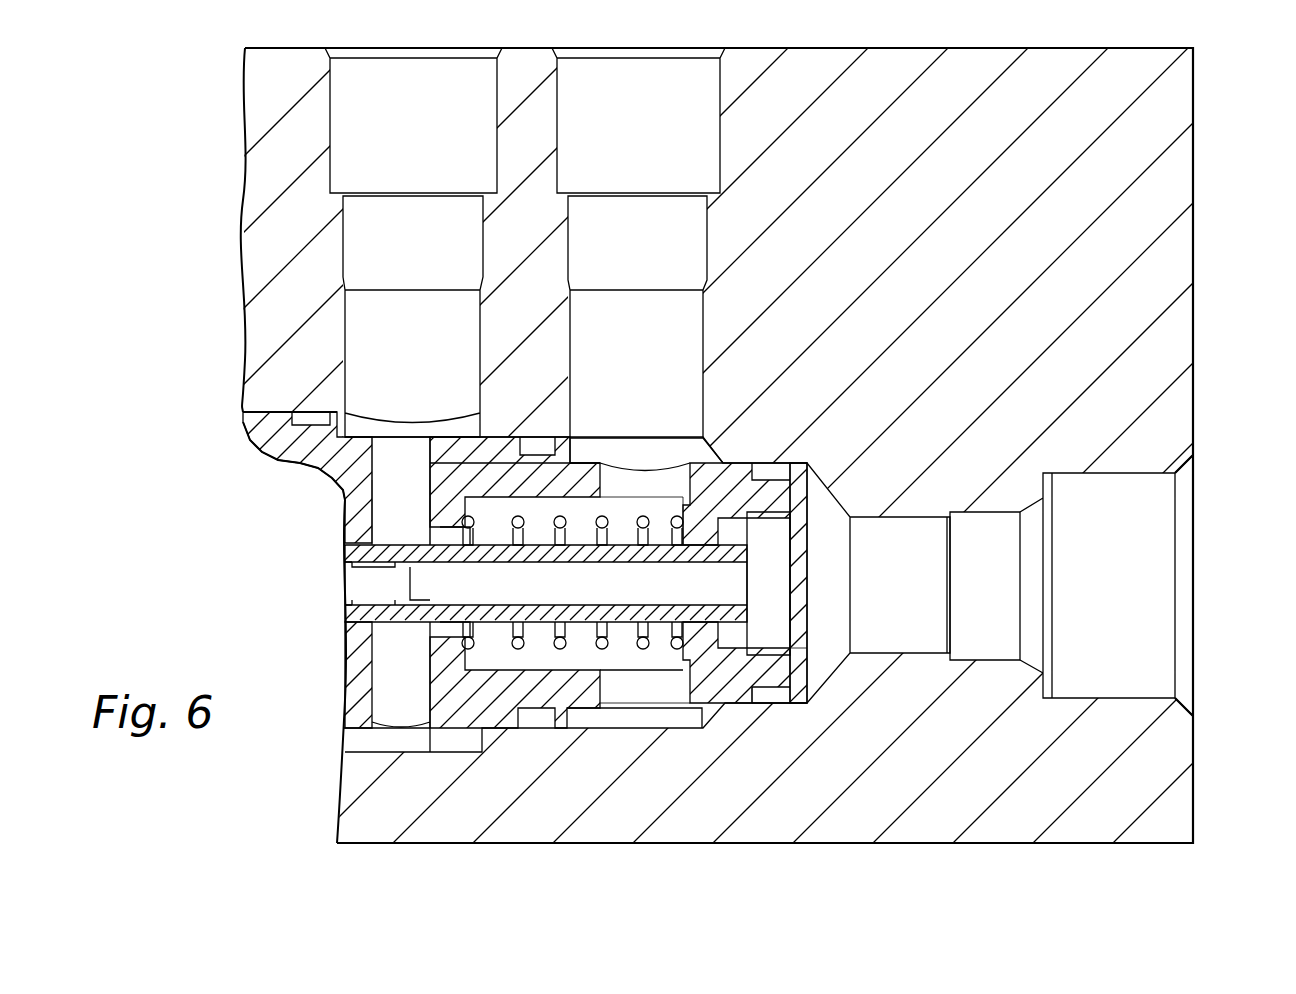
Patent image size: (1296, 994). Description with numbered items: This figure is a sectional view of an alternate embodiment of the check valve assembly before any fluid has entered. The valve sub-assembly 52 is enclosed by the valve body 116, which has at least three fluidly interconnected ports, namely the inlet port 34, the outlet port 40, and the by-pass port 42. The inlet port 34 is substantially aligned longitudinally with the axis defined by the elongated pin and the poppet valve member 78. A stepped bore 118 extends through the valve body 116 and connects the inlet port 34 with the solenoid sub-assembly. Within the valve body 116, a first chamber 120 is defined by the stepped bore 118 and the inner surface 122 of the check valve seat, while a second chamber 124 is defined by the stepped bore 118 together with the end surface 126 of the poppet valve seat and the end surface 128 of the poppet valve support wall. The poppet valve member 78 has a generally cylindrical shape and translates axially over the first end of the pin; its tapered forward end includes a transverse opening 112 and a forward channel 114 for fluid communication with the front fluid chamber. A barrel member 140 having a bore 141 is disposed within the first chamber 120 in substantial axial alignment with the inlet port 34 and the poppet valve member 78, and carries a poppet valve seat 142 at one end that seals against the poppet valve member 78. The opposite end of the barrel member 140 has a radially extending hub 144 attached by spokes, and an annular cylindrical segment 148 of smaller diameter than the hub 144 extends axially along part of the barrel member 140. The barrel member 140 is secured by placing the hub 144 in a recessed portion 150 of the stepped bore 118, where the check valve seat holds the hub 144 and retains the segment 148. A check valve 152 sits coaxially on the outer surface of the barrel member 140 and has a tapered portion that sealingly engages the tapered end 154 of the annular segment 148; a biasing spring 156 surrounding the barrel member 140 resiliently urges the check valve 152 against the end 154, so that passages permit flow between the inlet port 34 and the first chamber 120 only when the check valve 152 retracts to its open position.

The by-pass port 42 is at (397, 48).
The outlet port 40 is at (637, 48).
The valve sub-assembly 52 is at (963, 38).
The valve body 116 is at (1193, 220).
The inlet port 34 is at (1193, 607).
The transverse opening 112 is at (345, 650).
The forward channel 114 is at (403, 587).
The poppet valve seat 142 is at (428, 545).
The inner surface of check valve seat 122 is at (478, 508).
The second chamber 124 is at (403, 455).
The end surface of poppet valve support wall 128 is at (390, 480).
The end surface of poppet valve seat 126 is at (413, 485).
The bore 141 is at (503, 562).
The poppet valve member 78 is at (345, 577).
The biasing spring 156 is at (495, 660).
The stepped bore 118 is at (600, 718).
The first chamber 120 is at (632, 680).
The check valve 152 is at (740, 515).
The barrel member 140 is at (735, 633).
The recessed portion 150 is at (777, 450).
The end of annular segment 154 is at (690, 655).
The annular cylindrical segment 148 is at (763, 693).
The hub 144 is at (815, 675).